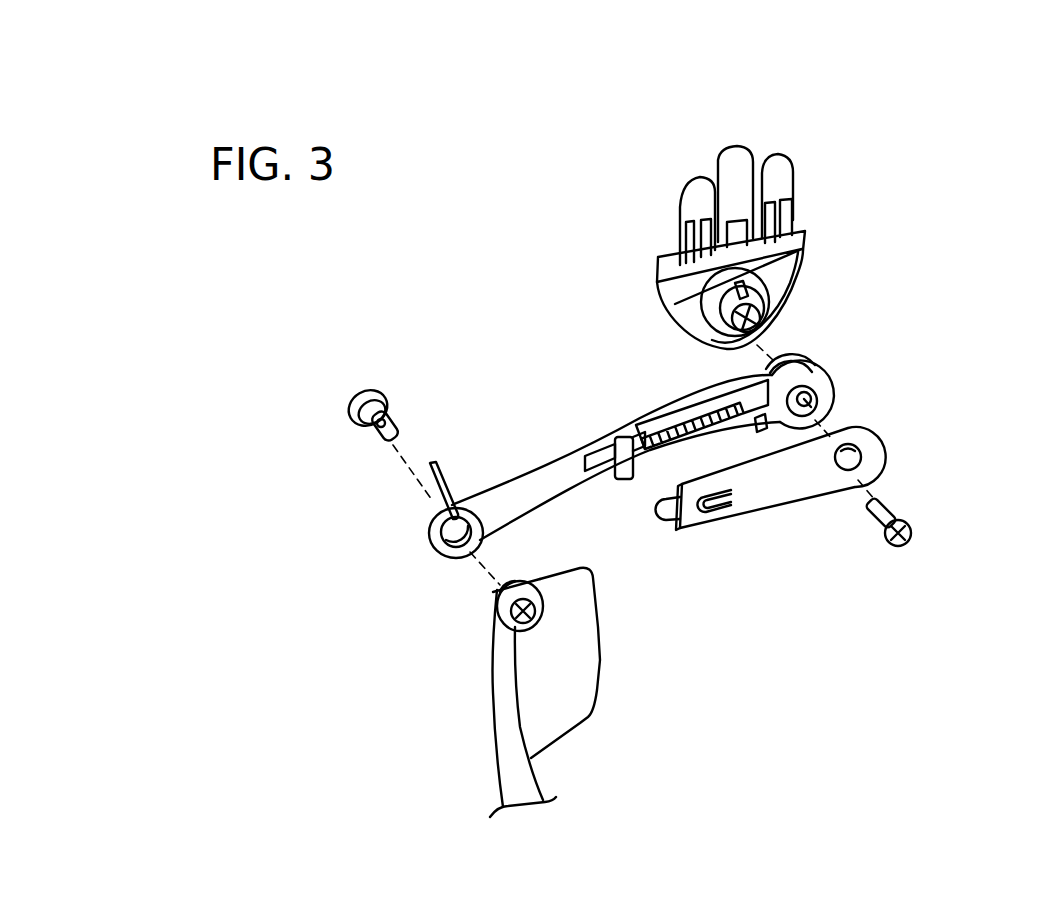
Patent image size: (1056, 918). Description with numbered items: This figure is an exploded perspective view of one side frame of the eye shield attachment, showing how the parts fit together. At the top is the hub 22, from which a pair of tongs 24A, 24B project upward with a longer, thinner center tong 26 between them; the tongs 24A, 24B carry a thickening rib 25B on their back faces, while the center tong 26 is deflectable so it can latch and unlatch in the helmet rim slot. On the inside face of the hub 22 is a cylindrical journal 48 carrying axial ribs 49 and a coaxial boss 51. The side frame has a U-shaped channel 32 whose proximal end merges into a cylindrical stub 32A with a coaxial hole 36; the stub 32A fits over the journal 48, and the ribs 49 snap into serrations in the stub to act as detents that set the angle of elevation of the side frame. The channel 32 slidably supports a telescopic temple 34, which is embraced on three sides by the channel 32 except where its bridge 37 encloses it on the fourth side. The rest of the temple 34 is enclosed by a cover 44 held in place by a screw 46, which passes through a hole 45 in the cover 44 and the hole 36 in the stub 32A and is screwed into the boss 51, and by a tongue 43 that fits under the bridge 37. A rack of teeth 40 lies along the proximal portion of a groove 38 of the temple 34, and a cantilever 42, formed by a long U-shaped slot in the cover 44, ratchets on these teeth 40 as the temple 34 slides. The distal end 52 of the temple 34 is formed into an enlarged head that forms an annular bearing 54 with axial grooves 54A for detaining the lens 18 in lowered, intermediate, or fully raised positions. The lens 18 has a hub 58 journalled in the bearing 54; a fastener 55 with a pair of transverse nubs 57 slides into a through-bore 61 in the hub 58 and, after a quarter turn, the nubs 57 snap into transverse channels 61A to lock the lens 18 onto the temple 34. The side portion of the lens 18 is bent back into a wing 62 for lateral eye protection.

The lens 18 is at (440, 705).
The hub 22 is at (673, 270).
The tong 24A is at (822, 151).
The tong 24B is at (642, 154).
The thickening rib 25B is at (730, 193).
The center tong 26 is at (747, 136).
The channel 32 is at (706, 347).
The cylindrical stub 32A is at (864, 381).
The telescopic temple 34 is at (643, 450).
The coaxial hole 36 is at (864, 413).
The bridge 37 is at (608, 415).
The groove 38 is at (578, 425).
The teeth 40 is at (650, 475).
The cantilever 42 is at (741, 570).
The tongue 43 is at (655, 540).
The cover 44 is at (781, 519).
The hole 45 is at (915, 467).
The screw 46 is at (897, 572).
The cylindrical journal 48 is at (616, 277).
The axial rib 49 is at (801, 271).
The coaxial boss 51 is at (816, 329).
The distal end 52 is at (411, 519).
The annular bearing 54 is at (420, 580).
The axial groove 54A is at (416, 515).
The fastener 55 is at (399, 386).
The transverse nub 57 is at (323, 431).
The hub 58 is at (443, 626).
The through-bore 61 is at (451, 652).
The transverse channel 61A is at (600, 622).
The wing 62 is at (617, 663).